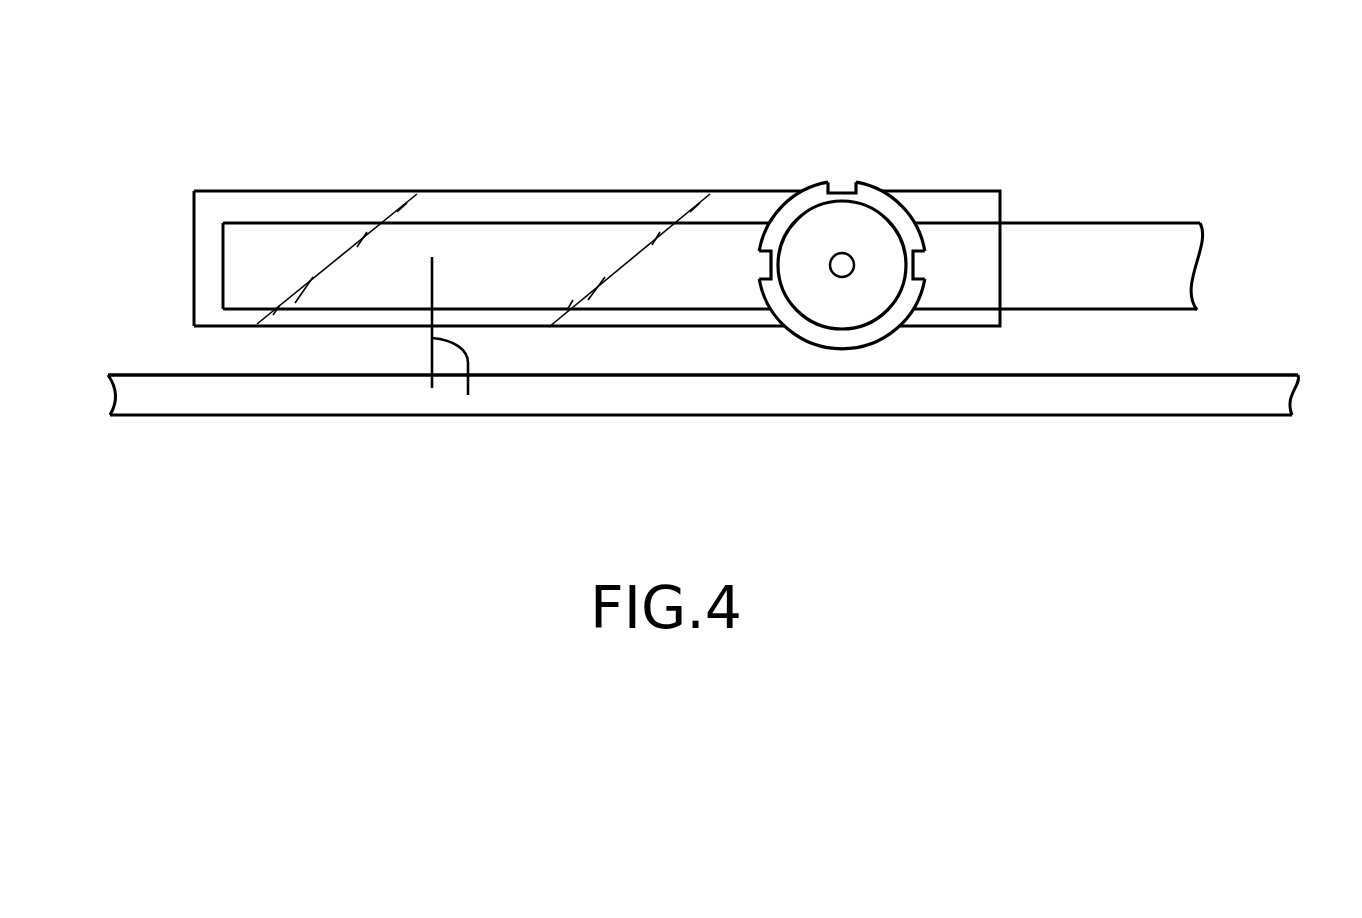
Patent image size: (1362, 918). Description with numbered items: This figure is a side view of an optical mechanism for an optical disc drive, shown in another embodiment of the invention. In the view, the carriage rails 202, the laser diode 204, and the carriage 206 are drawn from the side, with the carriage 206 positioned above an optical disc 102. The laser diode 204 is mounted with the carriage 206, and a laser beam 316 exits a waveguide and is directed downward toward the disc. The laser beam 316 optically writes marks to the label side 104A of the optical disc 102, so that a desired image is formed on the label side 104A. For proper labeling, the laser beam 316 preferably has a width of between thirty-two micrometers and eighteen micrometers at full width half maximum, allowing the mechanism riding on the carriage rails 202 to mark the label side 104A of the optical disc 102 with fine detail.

The optical disc 102 is at (152, 397).
The label side 104A is at (1213, 375).
The carriage rails 202 is at (1130, 233).
The laser diode 204 is at (897, 210).
The carriage 206 is at (442, 190).
The laser beam 316 is at (466, 408).